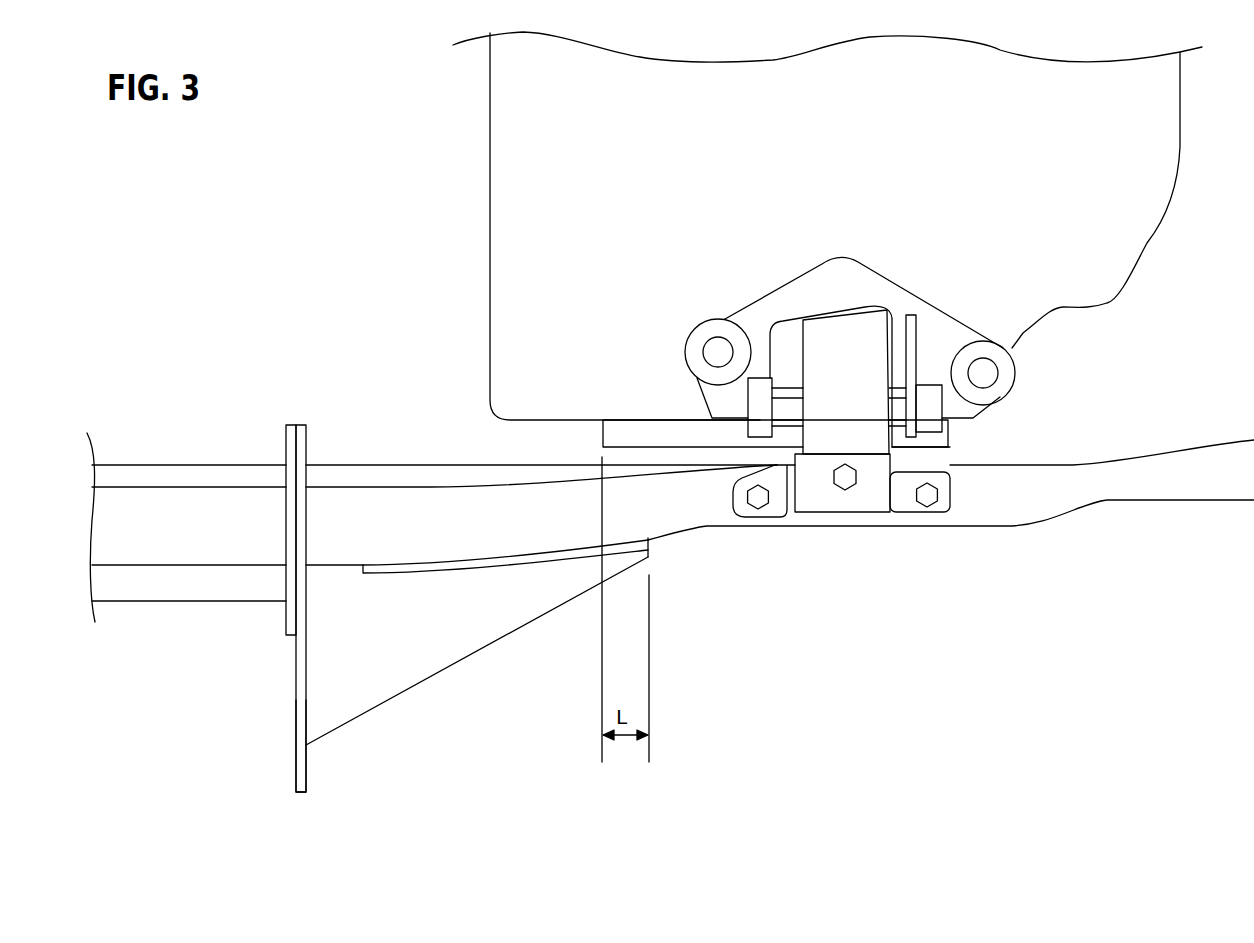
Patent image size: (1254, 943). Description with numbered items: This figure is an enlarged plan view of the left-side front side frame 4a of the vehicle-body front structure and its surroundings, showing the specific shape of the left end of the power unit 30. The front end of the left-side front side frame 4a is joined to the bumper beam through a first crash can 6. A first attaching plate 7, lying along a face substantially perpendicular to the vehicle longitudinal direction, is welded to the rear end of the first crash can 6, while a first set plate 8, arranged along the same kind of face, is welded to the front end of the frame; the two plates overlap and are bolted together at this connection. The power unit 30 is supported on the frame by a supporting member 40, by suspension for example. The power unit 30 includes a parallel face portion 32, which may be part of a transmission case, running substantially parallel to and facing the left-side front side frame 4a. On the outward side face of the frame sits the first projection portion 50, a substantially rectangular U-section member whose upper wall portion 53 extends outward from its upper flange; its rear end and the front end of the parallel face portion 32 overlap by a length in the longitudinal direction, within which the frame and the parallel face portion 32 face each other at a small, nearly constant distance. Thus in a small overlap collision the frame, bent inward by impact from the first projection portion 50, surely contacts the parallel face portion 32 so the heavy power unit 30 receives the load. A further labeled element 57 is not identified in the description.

The power unit 30 is at (507, 302).
The supporting member 40 is at (897, 296).
The parallel face portion 32 is at (703, 448).
The left-side front side frame 4a is at (983, 508).
The first crash can 6 is at (140, 587).
The first attaching plate 7 is at (287, 612).
The first set plate 8 is at (300, 752).
The first projection portion 50 is at (477, 666).
The upper wall portion 53 is at (452, 637).
The curved plate portion 57 is at (540, 560).